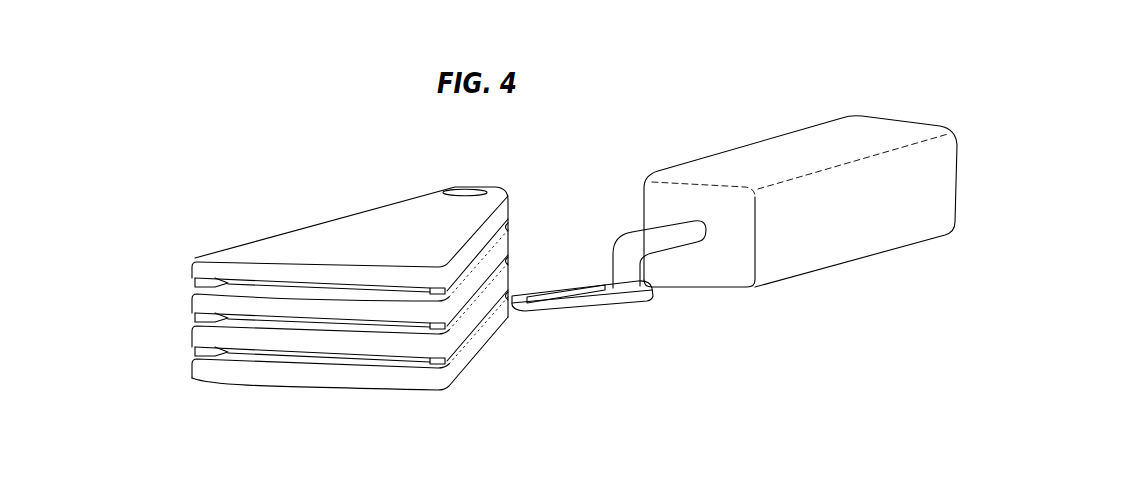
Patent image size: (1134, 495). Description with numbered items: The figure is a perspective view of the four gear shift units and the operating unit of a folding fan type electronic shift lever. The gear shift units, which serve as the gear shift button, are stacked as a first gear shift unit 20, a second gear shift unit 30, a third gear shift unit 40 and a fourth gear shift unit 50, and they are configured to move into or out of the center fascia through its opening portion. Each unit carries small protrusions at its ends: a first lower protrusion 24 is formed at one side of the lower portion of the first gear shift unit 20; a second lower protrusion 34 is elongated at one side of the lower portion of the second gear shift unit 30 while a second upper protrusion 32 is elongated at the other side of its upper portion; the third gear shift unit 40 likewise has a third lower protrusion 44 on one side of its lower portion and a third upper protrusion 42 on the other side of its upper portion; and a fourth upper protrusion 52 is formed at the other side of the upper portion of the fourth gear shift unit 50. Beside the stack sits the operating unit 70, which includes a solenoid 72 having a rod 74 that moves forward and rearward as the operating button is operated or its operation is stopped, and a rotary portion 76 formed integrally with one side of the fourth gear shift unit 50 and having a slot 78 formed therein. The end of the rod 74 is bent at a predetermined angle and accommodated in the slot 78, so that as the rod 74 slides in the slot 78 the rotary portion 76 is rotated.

The first gear shift unit 20 is at (397, 277).
The first lower protrusion 24 is at (207, 283).
The second gear shift unit 30 is at (335, 310).
The second upper protrusion 32 is at (448, 293).
The second lower protrusion 34 is at (207, 316).
The third gear shift unit 40 is at (288, 345).
The third upper protrusion 42 is at (448, 326).
The third lower protrusion 44 is at (207, 349).
The fourth gear shift unit 50 is at (248, 372).
The fourth upper protrusion 52 is at (448, 364).
The operating unit 70 is at (734, 269).
The solenoid 72 is at (800, 235).
The rod 74 is at (675, 242).
The rotary portion 76 is at (577, 304).
The slot 78 is at (598, 300).